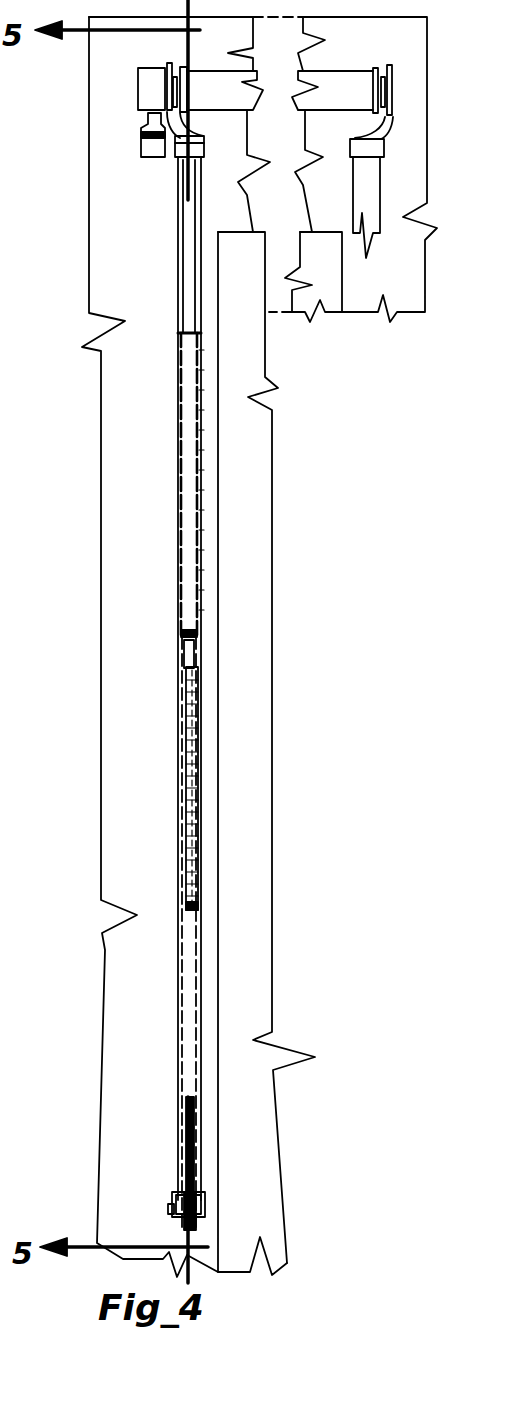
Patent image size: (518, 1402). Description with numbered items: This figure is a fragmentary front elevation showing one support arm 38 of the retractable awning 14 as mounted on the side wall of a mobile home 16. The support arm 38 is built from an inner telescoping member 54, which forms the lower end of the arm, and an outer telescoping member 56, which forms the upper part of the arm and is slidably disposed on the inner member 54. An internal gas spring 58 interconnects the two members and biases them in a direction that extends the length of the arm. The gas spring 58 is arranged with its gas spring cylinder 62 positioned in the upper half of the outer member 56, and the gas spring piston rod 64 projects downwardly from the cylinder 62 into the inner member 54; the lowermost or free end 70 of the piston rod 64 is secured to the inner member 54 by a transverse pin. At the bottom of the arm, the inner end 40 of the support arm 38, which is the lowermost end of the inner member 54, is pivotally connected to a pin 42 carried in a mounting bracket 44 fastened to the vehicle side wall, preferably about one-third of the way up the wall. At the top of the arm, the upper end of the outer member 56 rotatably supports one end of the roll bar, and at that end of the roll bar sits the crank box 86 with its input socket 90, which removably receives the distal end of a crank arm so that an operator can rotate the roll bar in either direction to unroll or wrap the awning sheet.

The retractable awning 14 is at (308, 809).
The mobile home 16 is at (126, 808).
The support arm 38 is at (179, 527).
The inner end 40 is at (178, 1179).
The pin 42 is at (195, 1224).
The bracket 44 is at (180, 1207).
The inner telescoping member 54 is at (200, 1002).
The outer telescoping member 56 is at (178, 232).
The gas spring 58 is at (190, 475).
The gas spring cylinder 62 is at (178, 470).
The gas spring piston rod 64 is at (190, 653).
The free end of piston rod 70 is at (200, 908).
The crank box 86 is at (150, 88).
The input socket 90 is at (145, 144).